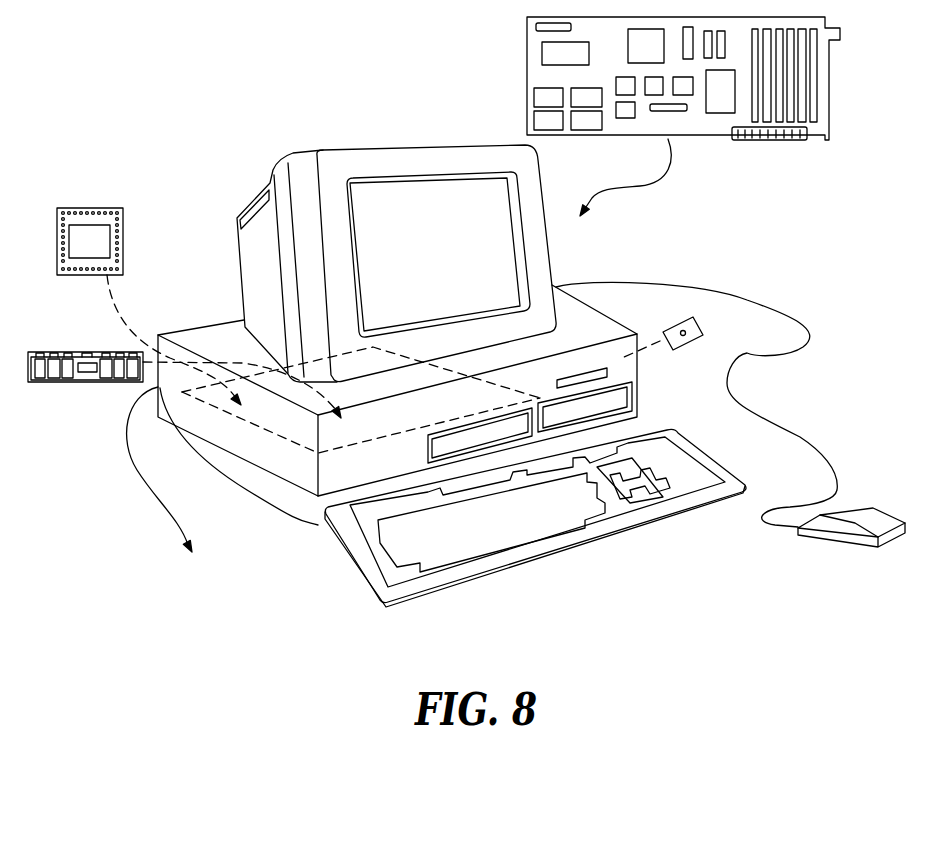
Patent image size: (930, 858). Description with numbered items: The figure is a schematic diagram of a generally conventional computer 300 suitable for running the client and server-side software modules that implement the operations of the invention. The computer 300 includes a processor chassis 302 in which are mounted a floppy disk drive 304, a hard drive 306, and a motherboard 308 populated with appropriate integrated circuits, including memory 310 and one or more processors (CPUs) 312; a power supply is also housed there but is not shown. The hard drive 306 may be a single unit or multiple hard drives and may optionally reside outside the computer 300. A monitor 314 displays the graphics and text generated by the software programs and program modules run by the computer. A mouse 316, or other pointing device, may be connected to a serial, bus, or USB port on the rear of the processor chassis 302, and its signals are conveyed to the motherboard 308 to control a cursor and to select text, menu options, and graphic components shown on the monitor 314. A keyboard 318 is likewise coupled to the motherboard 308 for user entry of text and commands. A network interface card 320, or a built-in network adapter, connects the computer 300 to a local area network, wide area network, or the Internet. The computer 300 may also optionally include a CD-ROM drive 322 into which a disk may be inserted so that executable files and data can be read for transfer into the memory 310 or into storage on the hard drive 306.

The computer 300 is at (549, 576).
The processor chassis 302 is at (648, 356).
The floppy disk drive 304 is at (598, 367).
The hard drive 306 is at (637, 410).
The motherboard 308 is at (260, 427).
The memory 310 is at (63, 352).
The processors (CPUs) 312 is at (123, 260).
The monitor 314 is at (545, 213).
The mouse 316 is at (848, 535).
The keyboard 318 is at (628, 531).
The network interface card 320 is at (825, 72).
The CD-ROM drive 322 is at (428, 452).